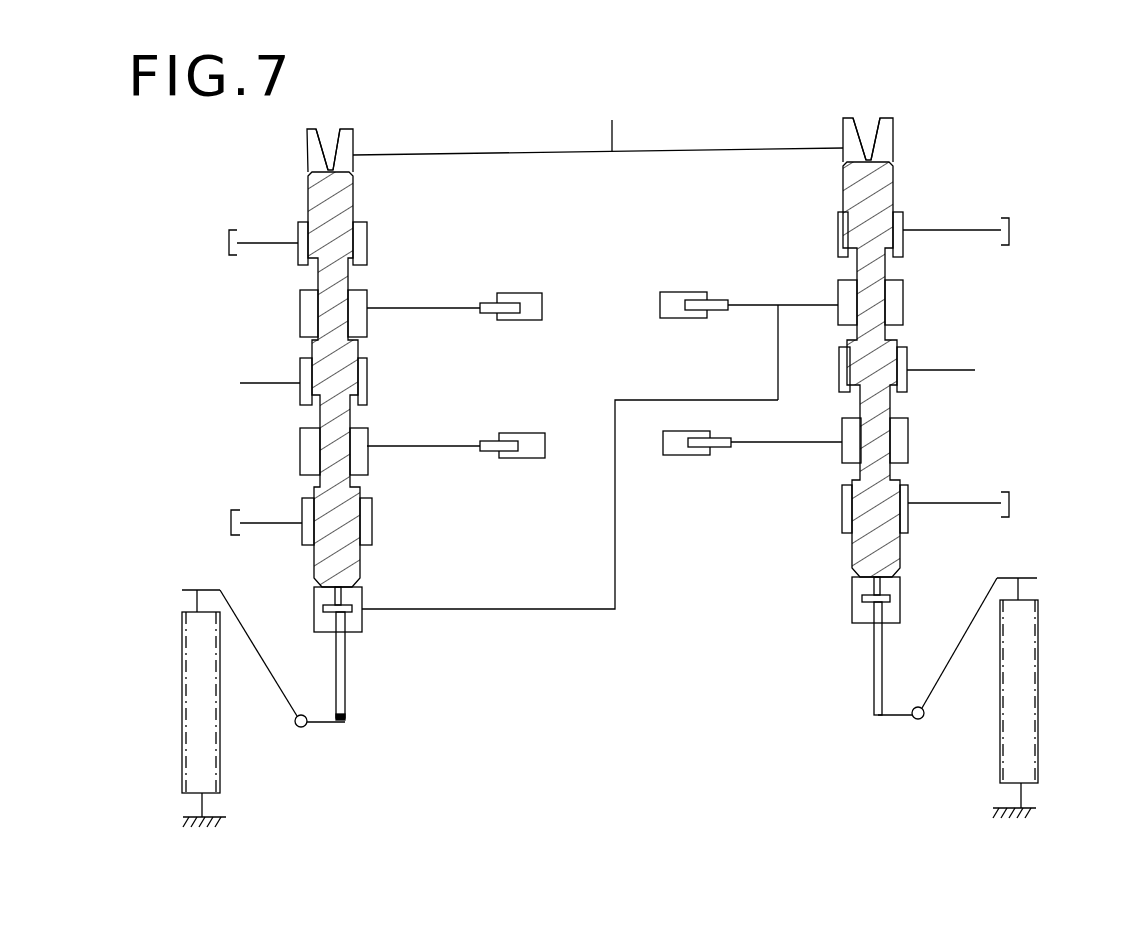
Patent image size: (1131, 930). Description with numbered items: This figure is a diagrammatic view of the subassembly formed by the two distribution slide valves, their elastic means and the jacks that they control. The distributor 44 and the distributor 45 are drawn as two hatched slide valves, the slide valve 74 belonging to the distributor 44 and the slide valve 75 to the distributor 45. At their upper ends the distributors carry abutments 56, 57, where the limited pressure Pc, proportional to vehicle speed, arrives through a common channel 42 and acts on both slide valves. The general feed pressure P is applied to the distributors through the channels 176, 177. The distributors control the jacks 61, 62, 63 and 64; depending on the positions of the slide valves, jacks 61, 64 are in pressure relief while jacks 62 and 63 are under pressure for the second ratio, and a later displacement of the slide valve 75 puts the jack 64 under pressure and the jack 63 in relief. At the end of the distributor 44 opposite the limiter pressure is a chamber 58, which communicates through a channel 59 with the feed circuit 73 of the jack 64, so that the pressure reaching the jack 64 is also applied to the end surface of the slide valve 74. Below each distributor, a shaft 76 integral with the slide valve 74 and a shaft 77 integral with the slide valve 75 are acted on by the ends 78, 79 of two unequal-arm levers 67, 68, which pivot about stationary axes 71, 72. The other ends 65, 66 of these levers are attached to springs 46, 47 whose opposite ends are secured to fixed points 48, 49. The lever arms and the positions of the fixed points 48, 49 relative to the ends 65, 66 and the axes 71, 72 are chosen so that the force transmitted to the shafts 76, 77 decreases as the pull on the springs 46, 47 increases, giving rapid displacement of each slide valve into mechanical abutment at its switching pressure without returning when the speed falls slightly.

The channel 42 is at (612, 131).
The distributor 44 is at (354, 140).
The abutment 56 is at (328, 142).
The distributor 45 is at (843, 128).
The abutment 57 is at (868, 135).
The slide valve 74 is at (340, 375).
The slide valve 75 is at (877, 357).
The channel 176 is at (240, 383).
The channel 177 is at (975, 370).
The jack 62 is at (515, 293).
The jack 61 is at (520, 433).
The jack 64 is at (682, 292).
The jack 63 is at (688, 455).
The feed circuit 73 is at (795, 300).
The channel 59 is at (615, 547).
The chamber 58 is at (354, 620).
The shaft 76 is at (345, 685).
The lever end 78 is at (343, 722).
The stationary axis 71 is at (303, 727).
The lever 67 is at (258, 645).
The lever end 65 is at (190, 590).
The spring 46 is at (182, 735).
The fixed point 48 is at (215, 817).
The shaft 77 is at (874, 660).
The lever end 79 is at (878, 715).
The stationary axis 72 is at (915, 725).
The lever 68 is at (968, 624).
The lever end 66 is at (1040, 578).
The spring 47 is at (1033, 705).
The fixed point 49 is at (1028, 808).